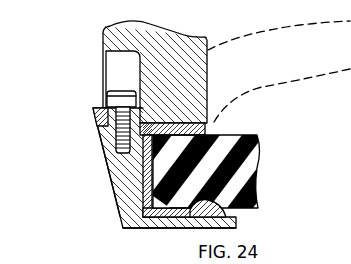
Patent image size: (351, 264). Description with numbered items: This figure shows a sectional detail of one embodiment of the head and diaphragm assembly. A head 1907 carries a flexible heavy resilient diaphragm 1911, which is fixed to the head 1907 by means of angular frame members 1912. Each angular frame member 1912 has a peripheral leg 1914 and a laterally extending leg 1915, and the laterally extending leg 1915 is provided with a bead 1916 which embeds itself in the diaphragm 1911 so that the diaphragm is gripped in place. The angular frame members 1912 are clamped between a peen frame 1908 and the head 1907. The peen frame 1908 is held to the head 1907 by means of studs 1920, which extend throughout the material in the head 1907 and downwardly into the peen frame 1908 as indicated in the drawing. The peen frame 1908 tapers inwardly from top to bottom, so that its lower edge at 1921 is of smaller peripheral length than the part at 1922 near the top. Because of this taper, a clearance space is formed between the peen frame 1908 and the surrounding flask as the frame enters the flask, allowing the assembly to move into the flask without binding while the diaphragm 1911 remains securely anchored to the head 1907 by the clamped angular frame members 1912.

The head 1907 is at (207, 73).
The peen frame 1908 is at (100, 137).
The flexible heavy resilient diaphragm 1911 is at (262, 163).
The angular frame members 1912 is at (140, 160).
The peripheral leg 1914 is at (108, 193).
The laterally extending leg 1915 is at (166, 220).
The bead 1916 is at (226, 212).
The studs 1920 is at (107, 101).
The lower edge of peen frame 1921 is at (120, 216).
The upper part of peen frame 1922 is at (92, 120).